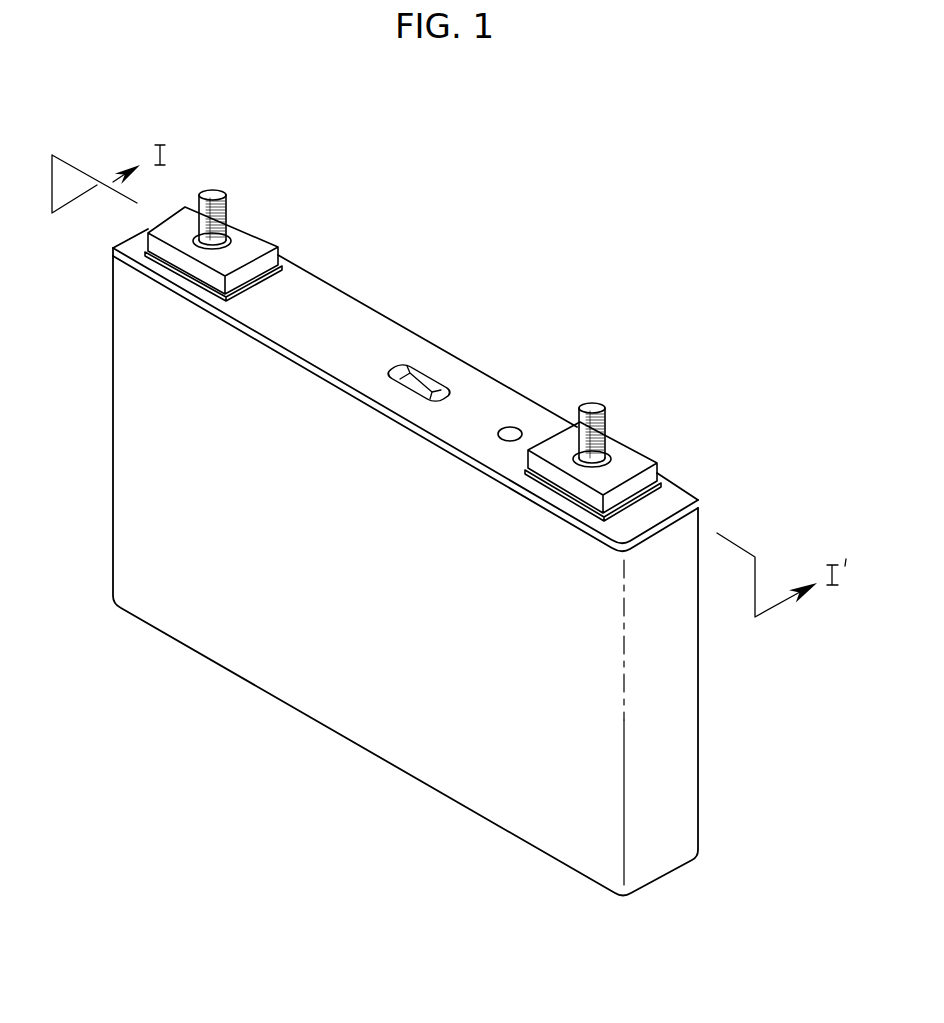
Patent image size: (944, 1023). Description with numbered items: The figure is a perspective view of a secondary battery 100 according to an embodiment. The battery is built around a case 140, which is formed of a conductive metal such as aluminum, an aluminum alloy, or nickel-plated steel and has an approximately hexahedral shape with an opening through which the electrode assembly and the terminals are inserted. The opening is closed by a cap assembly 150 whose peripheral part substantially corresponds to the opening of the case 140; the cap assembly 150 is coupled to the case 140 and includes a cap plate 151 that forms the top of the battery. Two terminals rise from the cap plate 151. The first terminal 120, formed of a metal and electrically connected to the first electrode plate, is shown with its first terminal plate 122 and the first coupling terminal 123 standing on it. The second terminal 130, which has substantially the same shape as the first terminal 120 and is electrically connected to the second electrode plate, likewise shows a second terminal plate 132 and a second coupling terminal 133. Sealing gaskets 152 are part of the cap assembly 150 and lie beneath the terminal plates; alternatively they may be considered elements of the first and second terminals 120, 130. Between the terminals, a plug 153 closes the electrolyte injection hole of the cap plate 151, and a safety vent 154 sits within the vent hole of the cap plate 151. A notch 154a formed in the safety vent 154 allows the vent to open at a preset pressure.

The secondary battery 100 is at (769, 151).
The first terminal 120 is at (205, 166).
The first terminal plate 122 is at (261, 217).
The first coupling terminal 123 is at (231, 178).
The second terminal 130 is at (587, 385).
The second terminal plate 132 is at (644, 433).
The second coupling terminal 133 is at (613, 391).
The case 140 is at (343, 720).
The cap assembly 150 is at (382, 316).
The cap plate 151 is at (320, 300).
The sealing gaskets 152 is at (292, 272).
The plug 153 is at (507, 432).
The safety vent 154 is at (422, 366).
The notch 154a is at (432, 392).